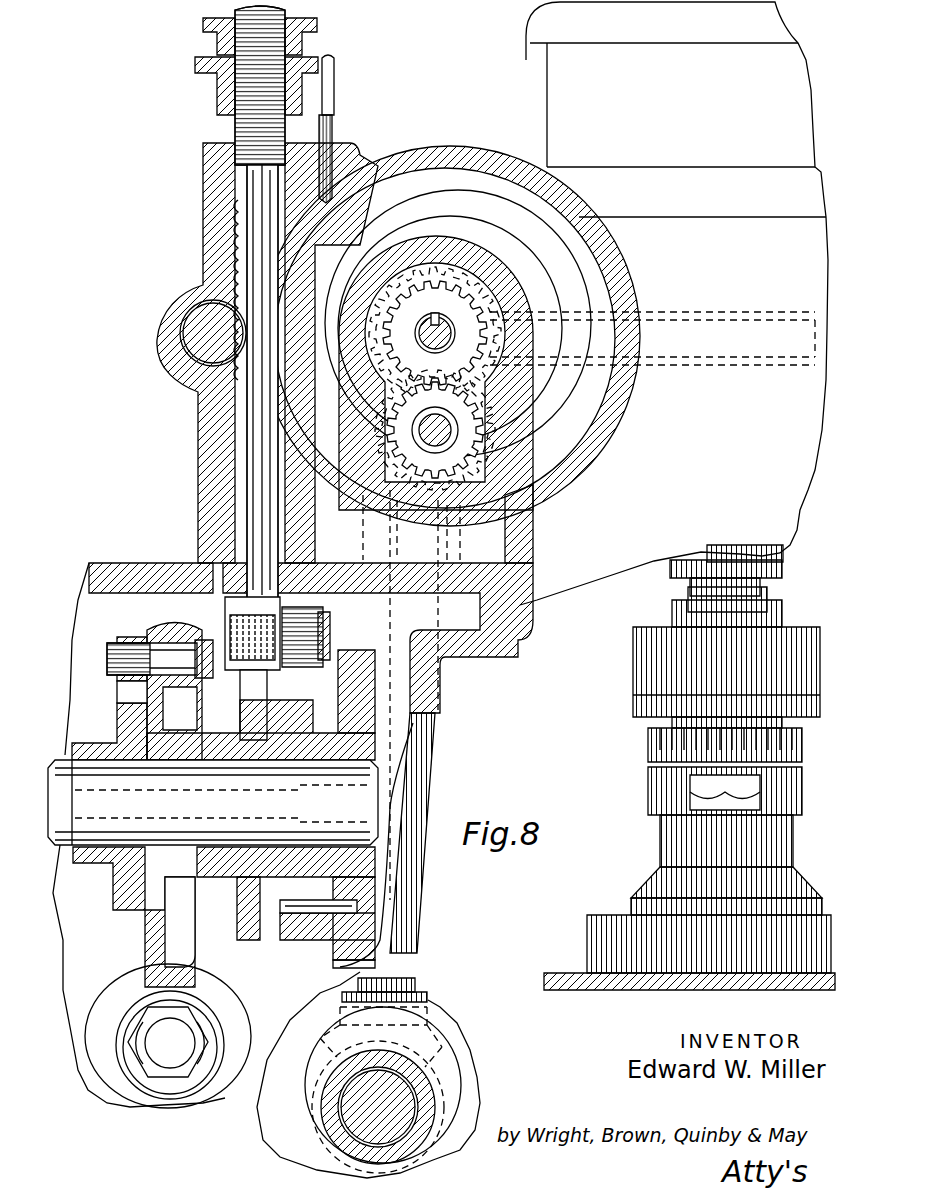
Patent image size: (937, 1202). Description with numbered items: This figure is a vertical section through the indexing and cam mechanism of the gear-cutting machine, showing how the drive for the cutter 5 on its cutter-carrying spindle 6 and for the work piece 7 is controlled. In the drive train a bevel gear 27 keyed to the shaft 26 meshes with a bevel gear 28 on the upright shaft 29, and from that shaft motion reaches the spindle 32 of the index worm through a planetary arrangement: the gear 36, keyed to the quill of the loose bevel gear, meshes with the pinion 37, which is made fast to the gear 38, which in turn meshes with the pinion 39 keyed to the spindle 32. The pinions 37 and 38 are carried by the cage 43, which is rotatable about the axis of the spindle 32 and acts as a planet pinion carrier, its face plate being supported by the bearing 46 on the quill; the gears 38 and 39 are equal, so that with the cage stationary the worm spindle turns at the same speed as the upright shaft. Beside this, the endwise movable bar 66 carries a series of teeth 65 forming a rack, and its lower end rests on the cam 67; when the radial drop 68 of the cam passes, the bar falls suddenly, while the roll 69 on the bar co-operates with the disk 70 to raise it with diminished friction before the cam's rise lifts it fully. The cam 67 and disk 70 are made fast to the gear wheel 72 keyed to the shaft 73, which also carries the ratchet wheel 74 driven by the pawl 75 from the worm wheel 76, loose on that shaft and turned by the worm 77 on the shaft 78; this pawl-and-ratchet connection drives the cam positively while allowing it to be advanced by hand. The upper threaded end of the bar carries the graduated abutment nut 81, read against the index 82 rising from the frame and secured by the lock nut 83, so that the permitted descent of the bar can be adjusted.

The cutter 5 is at (648, 745).
The cutter-carrying spindle 6 is at (695, 603).
The work piece 7 is at (655, 770).
The shaft 26 is at (400, 1113).
The bevel gear 27 is at (440, 1090).
The bevel gear 28 is at (442, 1053).
The upright shaft 29 is at (423, 753).
The spindle of the index worm 32 is at (440, 333).
The gear 36 is at (458, 307).
The pinion 37 is at (523, 388).
The gear 38 is at (477, 442).
The pinion 39 is at (472, 297).
The cage 43 is at (527, 288).
The bearing 46 is at (437, 425).
The teeth 65 is at (232, 300).
The endwise movable bar 66 is at (240, 432).
The cam 67 is at (250, 935).
The radial offset or drop of the cam 68 is at (253, 683).
The roll 69 is at (287, 607).
The disk 70 is at (297, 937).
The gear wheel 72 is at (353, 650).
The shaft 73 is at (237, 848).
The ratchet wheel 74 is at (128, 713).
The pawl 75 is at (140, 690).
The worm wheel 76 is at (180, 618).
The worm 77 is at (207, 1008).
The shaft 78 is at (183, 1042).
The nut 81 is at (222, 80).
The index 82 is at (327, 103).
The lock nut 83 is at (212, 28).